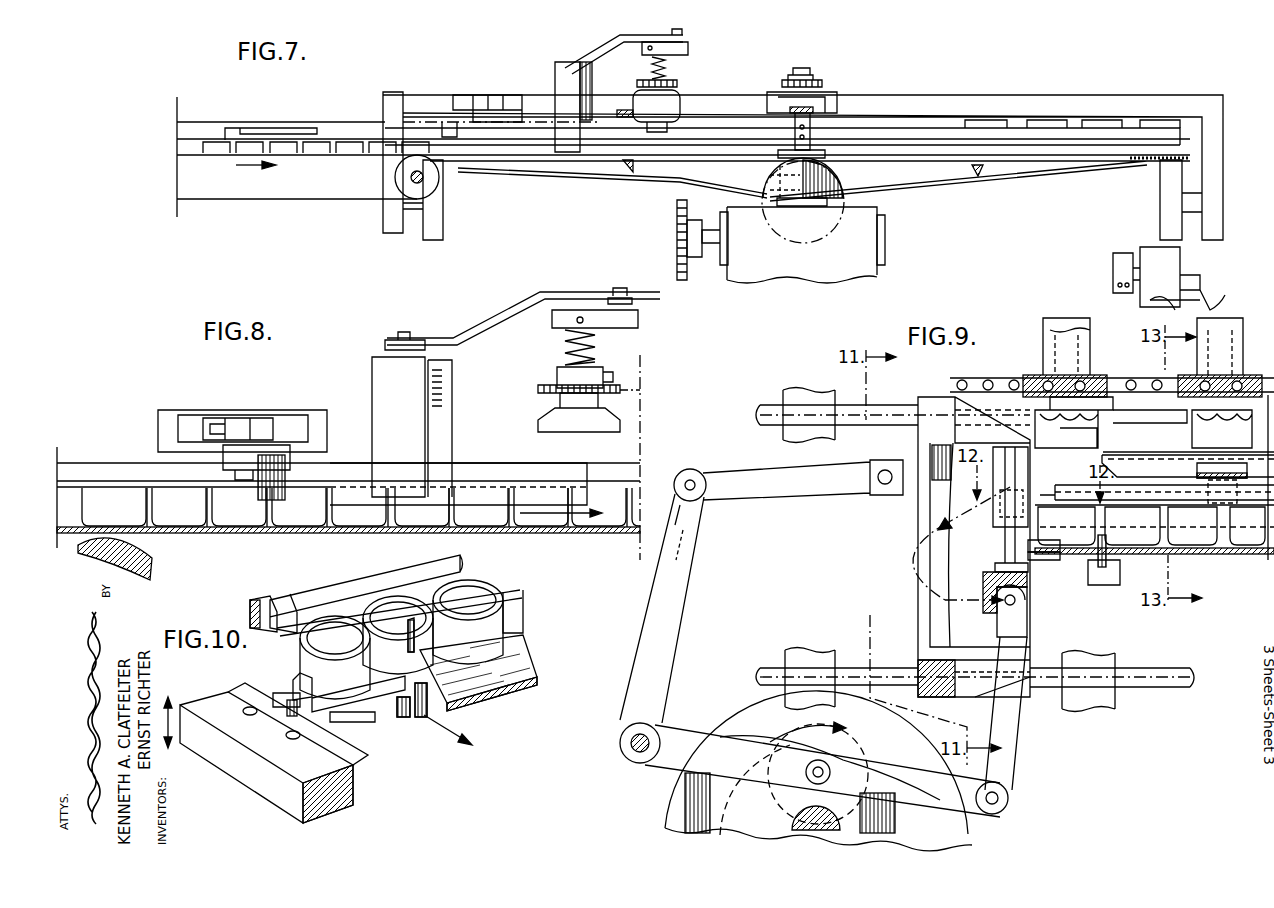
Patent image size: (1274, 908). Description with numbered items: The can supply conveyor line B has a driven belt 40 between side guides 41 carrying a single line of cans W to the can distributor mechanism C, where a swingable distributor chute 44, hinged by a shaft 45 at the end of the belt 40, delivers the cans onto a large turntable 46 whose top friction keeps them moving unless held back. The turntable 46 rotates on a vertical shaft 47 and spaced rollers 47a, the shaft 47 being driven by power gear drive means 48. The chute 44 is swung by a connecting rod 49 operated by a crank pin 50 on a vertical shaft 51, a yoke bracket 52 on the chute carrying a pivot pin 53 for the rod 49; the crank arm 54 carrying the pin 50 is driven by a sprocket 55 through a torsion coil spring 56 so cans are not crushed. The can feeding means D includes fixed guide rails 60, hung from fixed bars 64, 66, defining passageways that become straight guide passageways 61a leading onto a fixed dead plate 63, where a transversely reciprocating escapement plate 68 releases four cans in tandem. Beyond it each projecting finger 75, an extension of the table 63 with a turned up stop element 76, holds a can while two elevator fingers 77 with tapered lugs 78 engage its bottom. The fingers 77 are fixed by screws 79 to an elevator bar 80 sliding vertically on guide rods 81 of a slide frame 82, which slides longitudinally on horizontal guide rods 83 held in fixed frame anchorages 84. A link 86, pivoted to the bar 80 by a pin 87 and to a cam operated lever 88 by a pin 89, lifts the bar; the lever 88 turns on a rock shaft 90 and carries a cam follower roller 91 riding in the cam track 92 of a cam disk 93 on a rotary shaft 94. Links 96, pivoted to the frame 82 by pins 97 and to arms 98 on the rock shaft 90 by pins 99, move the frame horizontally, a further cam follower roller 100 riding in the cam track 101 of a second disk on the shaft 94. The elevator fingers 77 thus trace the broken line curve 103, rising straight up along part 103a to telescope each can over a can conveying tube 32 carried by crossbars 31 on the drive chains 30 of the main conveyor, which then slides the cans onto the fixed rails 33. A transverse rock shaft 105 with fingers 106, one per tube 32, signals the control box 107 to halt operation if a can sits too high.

In FIG. 9, the drive chain 30 is at (1005, 377).
In FIG. 9, the crossbars 31 is at (1095, 376).
In FIG. 9, the can conveying tubes 32 is at (1062, 318).
In FIG. 9, the table plates or rails 33 is at (1165, 451).
In FIG. 7, the driven belt 40 is at (330, 197).
In FIG. 8, the driven belt 40 is at (150, 556).
In FIG. 7, the side guides 41 is at (228, 128).
In FIG. 8, the side guides 41 is at (84, 462).
In FIG. 8, the swingable distributor chute 44 is at (481, 462).
In FIG. 7, the shaft 45 is at (479, 95).
In FIG. 8, the shaft 45 is at (237, 418).
In FIG. 7, the turntable 46 is at (560, 170).
In FIG. 8, the turntable 46 is at (385, 533).
In FIG. 7, the vertical shaft 47 is at (803, 68).
In FIG. 7, the spaced rollers 47a is at (440, 229).
In FIG. 7, the power gear drive means 48 is at (818, 268).
In FIG. 7, the connecting rod 49 is at (624, 40).
In FIG. 8, the connecting rod 49 is at (515, 320).
In FIG. 7, the crank pin 50 is at (683, 33).
In FIG. 8, the crank pin 50 is at (620, 288).
In FIG. 7, the vertical shaft 51 is at (668, 69).
In FIG. 8, the vertical shaft 51 is at (582, 310).
In FIG. 7, the yoke bracket 52 is at (553, 78).
In FIG. 8, the yoke bracket 52 is at (372, 362).
In FIG. 8, the pivot pin 53 is at (402, 332).
In FIG. 7, the crank arm 54 is at (690, 51).
In FIG. 8, the crank arm 54 is at (638, 320).
In FIG. 7, the sprocket 55 is at (640, 83).
In FIG. 8, the sprocket 55 is at (538, 389).
In FIG. 8, the torsion coil spring 56 is at (600, 346).
In FIG. 7, the guide rails or fences 60 is at (1012, 127).
In FIG. 10, the guide rails or fences 60 is at (495, 598).
In FIG. 9, the guide rails or fences 60 is at (1124, 493).
In FIG. 10, the straight guide passageways 61a is at (427, 603).
In FIG. 10, the fixed table or dead plate 63 is at (520, 686).
In FIG. 9, the fixed table or dead plate 63 is at (1248, 555).
In FIG. 7, the fixed bars 64 is at (915, 100).
In FIG. 8, the fixed bars 64 is at (163, 411).
In FIG. 9, the fixed bars 66 is at (1197, 470).
In FIG. 10, the escapement plate 68 is at (428, 720).
In FIG. 9, the escapement plate 68 is at (1108, 556).
In FIG. 10, the ledge or finger 75 is at (372, 712).
In FIG. 9, the ledge or finger 75 is at (1090, 572).
In FIG. 10, the stop element 76 is at (296, 680).
In FIG. 9, the stop element 76 is at (1028, 546).
In FIG. 10, the elevator fingers 77 is at (405, 718).
In FIG. 9, the elevator fingers 77 is at (1098, 585).
In FIG. 10, the lugs 78 is at (275, 695).
In FIG. 9, the lugs 78 is at (1010, 566).
In FIG. 10, the screws 79 is at (288, 738).
In FIG. 10, the elevator bar 80 is at (318, 815).
In FIG. 9, the elevator bar 80 is at (1000, 608).
In FIG. 9, the guide rods 81 is at (1003, 532).
In FIG. 9, the slide frame 82 is at (918, 638).
In FIG. 9, the horizontal guide rods 83 is at (886, 413).
In FIG. 9, the fixed frame anchorages 84 is at (783, 440).
In FIG. 9, the link 86 is at (1005, 748).
In FIG. 9, the pin 87 is at (1016, 604).
In FIG. 9, the cam operated lever 88 is at (1005, 808).
In FIG. 9, the pin 89 is at (1010, 790).
In FIG. 9, the rock shaft 90 is at (636, 752).
In FIG. 9, the cam follower roller 91 is at (828, 775).
In FIG. 9, the cam track 92 is at (690, 805).
In FIG. 9, the cam disk 93 is at (742, 710).
In FIG. 9, the rotary shaft 94 is at (806, 820).
In FIG. 9, the links 96 is at (796, 488).
In FIG. 9, the pins 97 is at (883, 485).
In FIG. 9, the arms 98 is at (685, 615).
In FIG. 9, the pins 99 is at (694, 480).
In FIG. 9, the cam follower roller 100 is at (868, 775).
In FIG. 9, the cam track 101 is at (895, 825).
In FIG. 9, the curve 103 is at (896, 566).
In FIG. 9, the part of the path 103a is at (1027, 580).
In FIG. 9, the transverse rock shaft 105 is at (1178, 300).
In FIG. 9, the fingers 106 is at (1220, 303).
In FIG. 9, the control box 107 is at (1120, 258).
In FIG. 7, the cans W is at (276, 128).
In FIG. 8, the cans W is at (118, 511).
In FIG. 10, the cans W is at (325, 612).
In FIG. 9, the cans W is at (1047, 506).
In FIG. 8, the can supply conveyor line B is at (90, 560).
In FIG. 7, the can distributor mechanism C is at (553, 66).
In FIG. 8, the can distributor mechanism C is at (455, 333).
In FIG. 7, the can feeding means / can loading mechanism D is at (1058, 168).
In FIG. 8, the can feeding means / can loading mechanism D is at (636, 537).